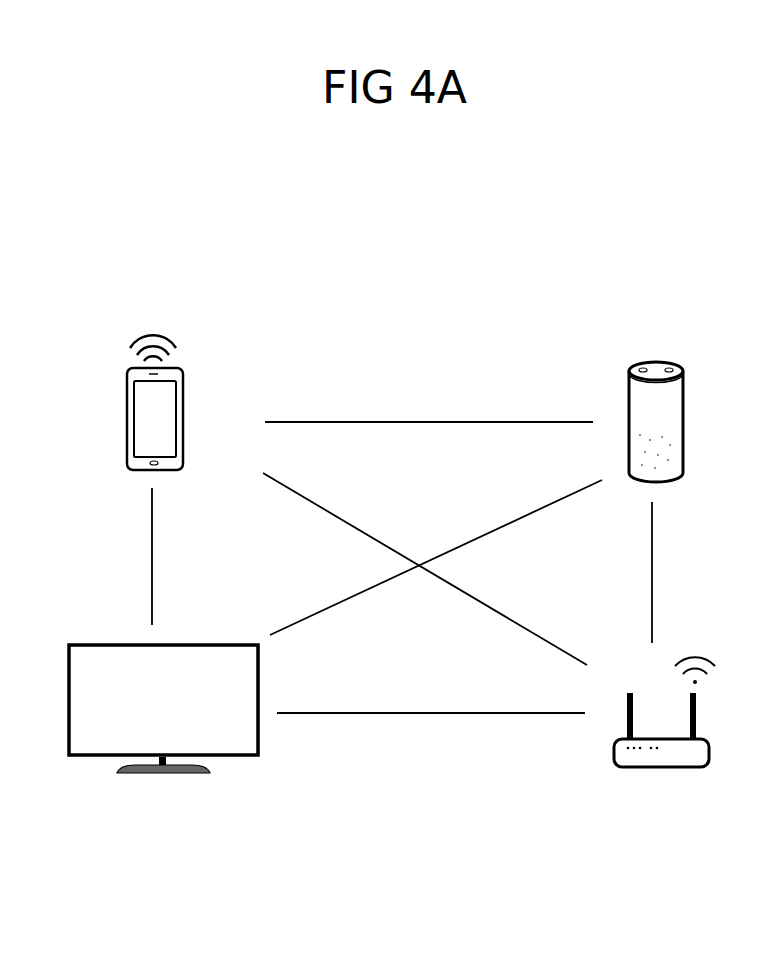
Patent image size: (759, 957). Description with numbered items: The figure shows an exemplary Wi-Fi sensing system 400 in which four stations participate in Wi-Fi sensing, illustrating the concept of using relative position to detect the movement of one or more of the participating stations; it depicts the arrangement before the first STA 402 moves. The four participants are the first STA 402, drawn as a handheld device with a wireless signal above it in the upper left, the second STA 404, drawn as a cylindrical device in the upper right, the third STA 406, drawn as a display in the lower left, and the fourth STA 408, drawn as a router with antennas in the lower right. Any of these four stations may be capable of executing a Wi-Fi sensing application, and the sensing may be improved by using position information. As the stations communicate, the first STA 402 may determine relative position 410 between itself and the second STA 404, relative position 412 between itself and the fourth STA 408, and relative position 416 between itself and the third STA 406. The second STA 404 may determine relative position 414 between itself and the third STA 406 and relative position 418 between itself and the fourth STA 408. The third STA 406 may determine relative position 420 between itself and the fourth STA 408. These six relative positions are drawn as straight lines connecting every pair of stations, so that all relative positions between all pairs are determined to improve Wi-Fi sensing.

The Wi-Fi sensing system 400 is at (353, 220).
The first STA 402 is at (145, 332).
The second STA 404 is at (650, 358).
The third STA 406 is at (137, 773).
The fourth STA 408 is at (660, 770).
The relative position between first STA and second STA 410 is at (455, 424).
The relative position between first STA and fourth STA 412 is at (442, 586).
The relative position between second STA and third STA 414 is at (373, 588).
The relative position between first STA and third STA 416 is at (152, 503).
The relative position between second STA and fourth STA 418 is at (648, 510).
The relative position between third STA and fourth STA 420 is at (470, 714).